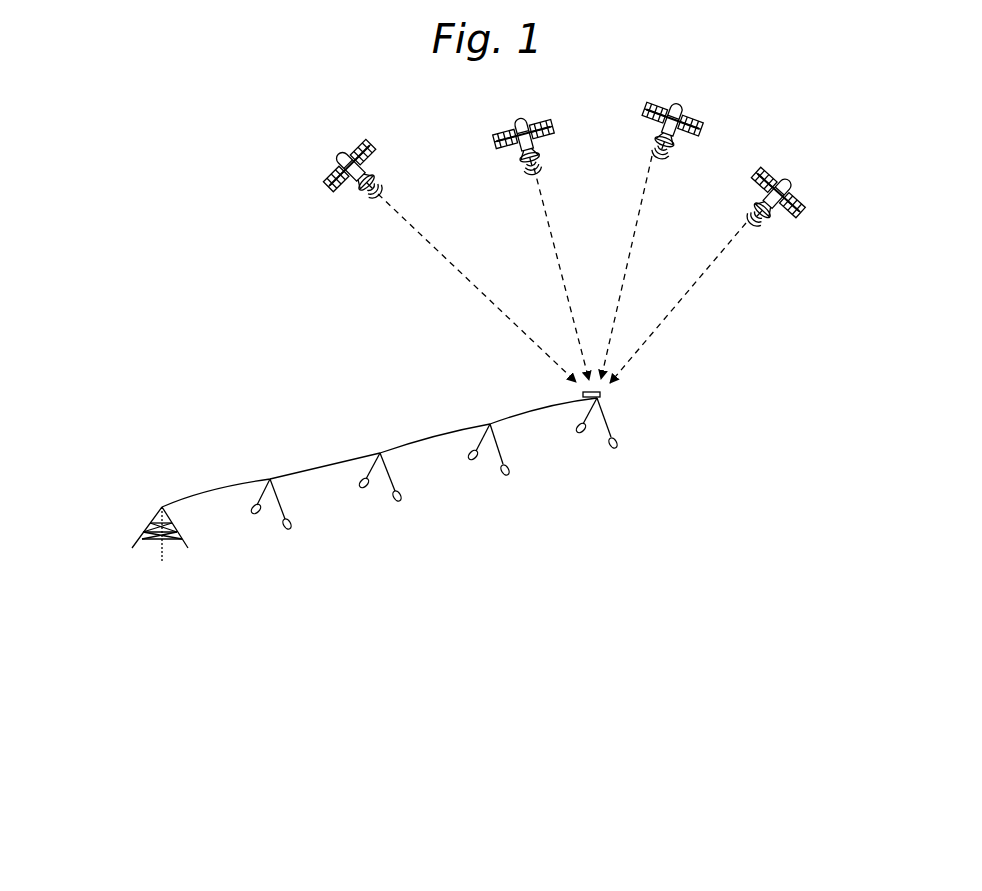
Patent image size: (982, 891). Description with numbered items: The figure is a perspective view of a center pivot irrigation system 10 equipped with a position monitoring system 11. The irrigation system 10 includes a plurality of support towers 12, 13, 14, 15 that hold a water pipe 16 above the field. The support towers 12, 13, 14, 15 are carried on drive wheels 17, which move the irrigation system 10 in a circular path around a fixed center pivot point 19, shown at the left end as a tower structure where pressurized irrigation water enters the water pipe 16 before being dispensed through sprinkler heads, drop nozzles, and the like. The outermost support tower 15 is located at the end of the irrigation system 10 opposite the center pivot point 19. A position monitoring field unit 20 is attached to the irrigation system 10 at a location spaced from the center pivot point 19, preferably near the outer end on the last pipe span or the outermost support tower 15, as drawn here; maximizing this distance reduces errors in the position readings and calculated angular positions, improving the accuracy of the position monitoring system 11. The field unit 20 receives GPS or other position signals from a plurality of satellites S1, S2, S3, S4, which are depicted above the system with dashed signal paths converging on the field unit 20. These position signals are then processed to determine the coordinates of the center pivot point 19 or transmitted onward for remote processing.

The center pivot irrigation system 10 is at (368, 632).
The position monitoring system 11 is at (610, 510).
The support tower 12 is at (279, 513).
The support tower 13 is at (385, 478).
The support tower 14 is at (502, 453).
The outermost support tower 15 is at (610, 434).
The water pipe 16 is at (213, 486).
The drive wheels 17 is at (506, 470).
The center pivot point 19 is at (162, 507).
The position monitoring field unit 20 is at (600, 398).
The satellite S1 is at (366, 191).
The satellite S2 is at (525, 162).
The satellite S3 is at (667, 144).
The satellite S4 is at (752, 221).